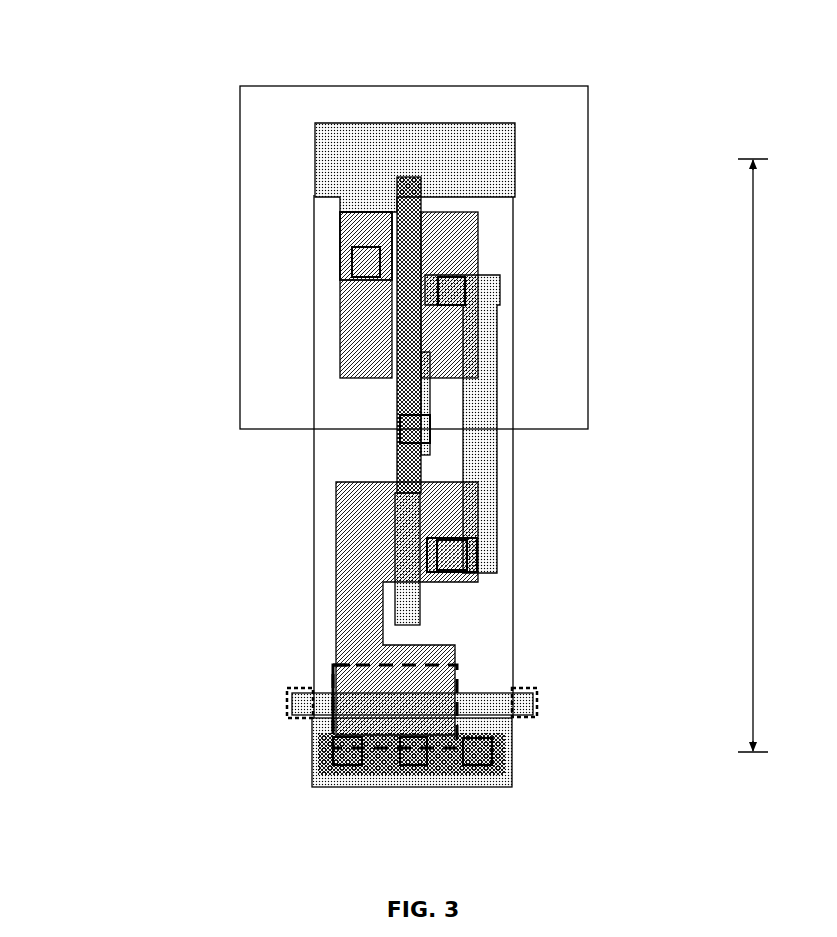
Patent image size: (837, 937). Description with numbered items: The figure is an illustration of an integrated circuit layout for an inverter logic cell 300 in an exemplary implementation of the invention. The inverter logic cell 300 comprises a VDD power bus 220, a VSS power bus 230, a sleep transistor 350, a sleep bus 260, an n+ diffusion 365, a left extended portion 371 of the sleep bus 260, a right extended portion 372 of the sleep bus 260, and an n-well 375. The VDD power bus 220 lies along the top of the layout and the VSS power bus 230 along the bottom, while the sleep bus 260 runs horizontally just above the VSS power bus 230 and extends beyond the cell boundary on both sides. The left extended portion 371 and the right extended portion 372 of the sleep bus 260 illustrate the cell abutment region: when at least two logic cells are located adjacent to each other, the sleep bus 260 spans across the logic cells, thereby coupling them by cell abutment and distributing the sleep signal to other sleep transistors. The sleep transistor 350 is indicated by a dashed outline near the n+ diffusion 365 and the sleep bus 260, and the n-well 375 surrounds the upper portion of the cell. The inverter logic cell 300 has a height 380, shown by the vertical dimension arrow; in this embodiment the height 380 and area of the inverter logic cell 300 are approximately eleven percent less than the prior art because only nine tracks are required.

The inverter logic cell 300 is at (104, 56).
The VDD power bus 220 is at (515, 145).
The VSS power bus 230 is at (513, 760).
The sleep bus 260 is at (488, 686).
The sleep transistor 350 is at (370, 659).
The n+ diffusion 365 is at (334, 660).
The left extended portion of sleep bus 371 is at (286, 688).
The right extended portion of sleep bus 372 is at (540, 686).
The n-well 375 is at (588, 272).
The height 380 is at (753, 238).